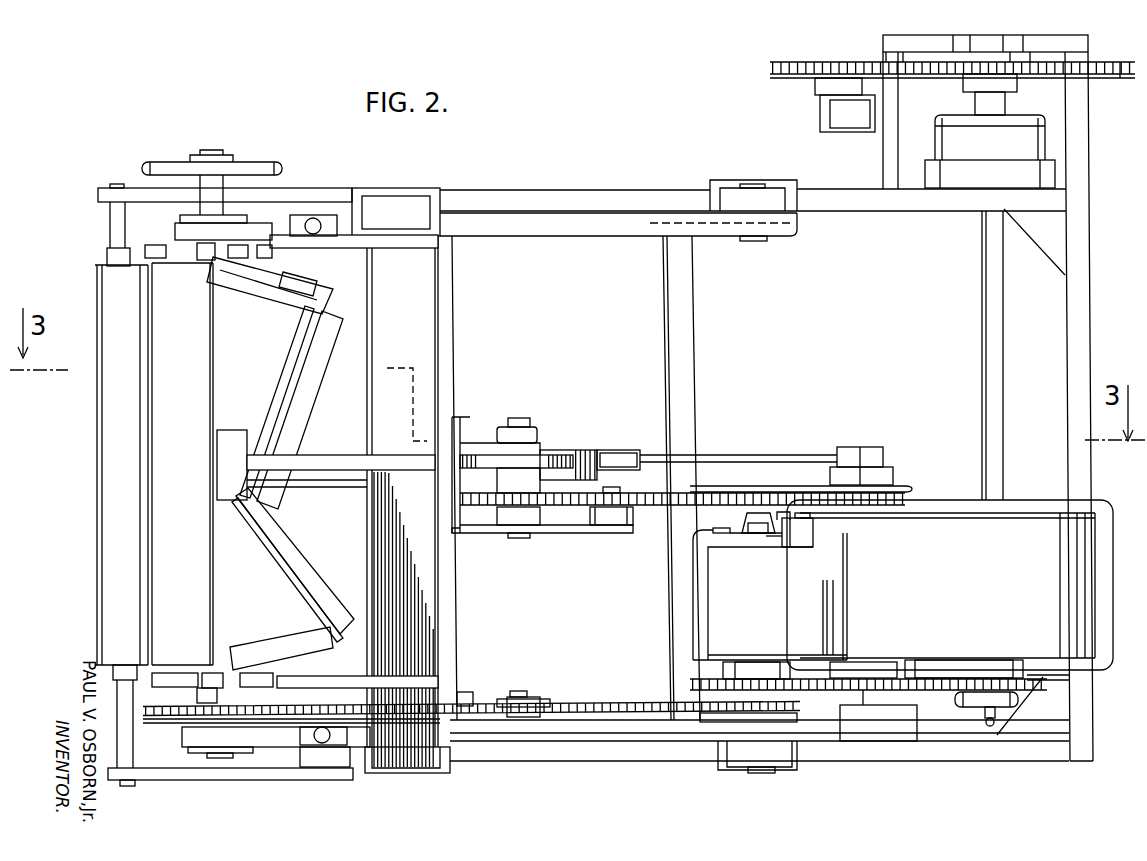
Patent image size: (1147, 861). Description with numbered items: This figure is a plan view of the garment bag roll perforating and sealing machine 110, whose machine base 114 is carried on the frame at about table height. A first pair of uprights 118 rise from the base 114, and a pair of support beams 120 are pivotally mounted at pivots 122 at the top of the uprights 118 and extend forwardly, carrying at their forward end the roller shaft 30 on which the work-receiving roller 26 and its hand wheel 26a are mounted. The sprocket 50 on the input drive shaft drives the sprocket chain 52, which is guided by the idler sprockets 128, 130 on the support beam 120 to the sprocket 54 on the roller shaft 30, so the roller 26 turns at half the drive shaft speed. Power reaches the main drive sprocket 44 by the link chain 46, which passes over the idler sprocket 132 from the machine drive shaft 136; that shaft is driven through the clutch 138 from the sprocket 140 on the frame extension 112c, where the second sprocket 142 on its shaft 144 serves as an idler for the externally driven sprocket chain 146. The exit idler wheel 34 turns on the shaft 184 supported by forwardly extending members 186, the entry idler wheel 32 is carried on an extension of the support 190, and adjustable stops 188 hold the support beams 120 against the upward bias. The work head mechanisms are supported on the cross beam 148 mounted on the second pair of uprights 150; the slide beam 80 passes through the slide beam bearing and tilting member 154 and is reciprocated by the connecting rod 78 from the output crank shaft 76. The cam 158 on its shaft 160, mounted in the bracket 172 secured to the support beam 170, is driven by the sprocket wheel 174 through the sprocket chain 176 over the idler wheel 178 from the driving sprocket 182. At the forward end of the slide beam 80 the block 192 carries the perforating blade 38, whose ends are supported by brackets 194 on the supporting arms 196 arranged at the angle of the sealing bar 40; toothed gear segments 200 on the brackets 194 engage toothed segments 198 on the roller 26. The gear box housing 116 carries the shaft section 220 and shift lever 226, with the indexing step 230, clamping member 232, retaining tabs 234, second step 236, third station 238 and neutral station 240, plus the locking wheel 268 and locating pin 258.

The garment bag roll perforating and sealing machine 110 is at (589, 120).
The machine base 114 is at (586, 195).
The support beams 120 is at (622, 221).
The extension from the frame 112c is at (1070, 146).
The machine drive shaft 136 is at (984, 322).
The sprocket 140 is at (955, 86).
The second sprocket 142 is at (775, 70).
The sprocket chain 146 is at (1127, 80).
The shaft 144 is at (835, 103).
The clutch 138 is at (945, 138).
The pivots 122 is at (750, 181).
The first pair of uprights 118 is at (772, 193).
The second pair of uprights 150 is at (424, 190).
The cross beam 148 is at (420, 332).
The mounting bracket 172 is at (452, 286).
The support 190 is at (416, 236).
The forwardly extending members 186 is at (105, 190).
The shaft 184 is at (107, 214).
The idler wheel 34 is at (97, 568).
The hand wheel 26a is at (272, 160).
The toothed segments 198 is at (150, 250).
The toothed gear segments 200 is at (197, 254).
The adjustable stops 188 is at (316, 215).
The roller shaft 30 is at (218, 760).
The work-receiving roller 26 is at (169, 464).
The perforating blade 38 is at (210, 370).
The block 192 is at (222, 456).
The brackets 194 is at (325, 302).
The idler wheel 32 is at (300, 392).
The supporting arms 196 is at (305, 345).
The sealing bar 40 is at (262, 350).
The slide beam 80 is at (320, 452).
The support beam 170 is at (470, 420).
The slide beam bearing and tilting member 154 is at (500, 428).
The cam 158 is at (560, 455).
The shaft 160 is at (521, 536).
The sprocket wheel 174 is at (458, 532).
The sprocket chain 176 is at (632, 511).
The idler wheel 178 is at (612, 510).
The sprocket chain 52 is at (612, 702).
The sprocket 54 is at (143, 712).
The guiding idler sprocket 128 is at (468, 695).
The guiding idler sprocket 130 is at (530, 695).
The connecting rod 78 is at (752, 458).
The output crank shaft 76 is at (876, 460).
The driving sprocket 182 is at (905, 488).
The neutral station 240 is at (697, 533).
The third station 238 is at (770, 596).
The shift lever 226 is at (740, 520).
The clamping member 232 is at (752, 512).
The shaft section 220 is at (772, 512).
The step 230 is at (816, 527).
The retaining tab 234 is at (726, 536).
The second step 236 is at (772, 540).
The gear box housing 116 is at (950, 585).
The main drive sprocket 44 is at (745, 665).
The link chain 46 is at (905, 662).
The sprocket 50 is at (795, 704).
The idler sprocket 132 is at (910, 705).
The locking wheel 268 is at (975, 708).
The locating pin 258 is at (991, 727).